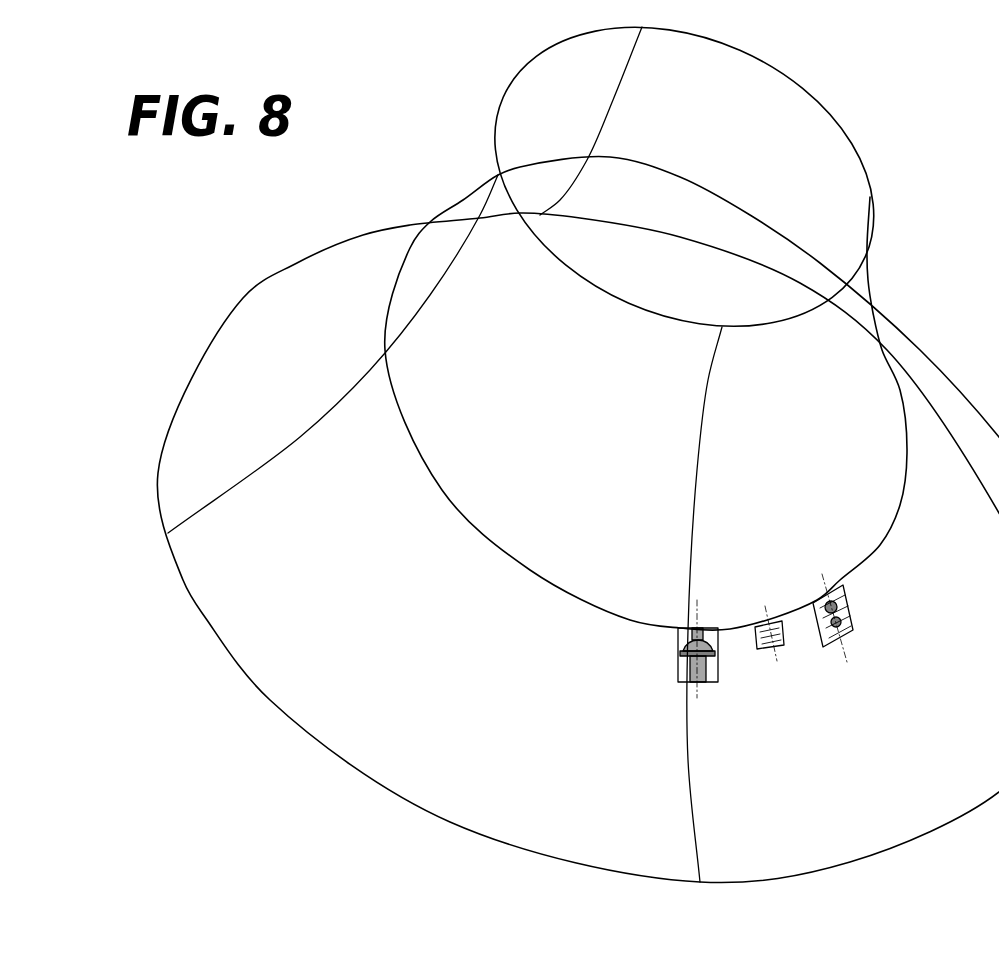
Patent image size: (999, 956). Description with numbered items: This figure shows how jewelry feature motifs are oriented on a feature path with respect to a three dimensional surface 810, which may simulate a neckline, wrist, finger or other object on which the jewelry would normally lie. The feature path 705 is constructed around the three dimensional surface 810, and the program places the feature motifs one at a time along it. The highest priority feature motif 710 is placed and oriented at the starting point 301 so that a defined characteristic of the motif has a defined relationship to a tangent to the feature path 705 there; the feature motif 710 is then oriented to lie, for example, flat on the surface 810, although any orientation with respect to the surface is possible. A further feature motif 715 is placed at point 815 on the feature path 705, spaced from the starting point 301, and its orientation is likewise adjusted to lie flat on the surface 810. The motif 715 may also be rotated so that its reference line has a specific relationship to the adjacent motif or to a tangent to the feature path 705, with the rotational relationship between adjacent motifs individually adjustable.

The three dimensional surface 810 is at (238, 613).
The feature path 705 is at (880, 545).
The feature motif 710 is at (730, 682).
The starting point 301 is at (703, 628).
The feature motif 715 is at (853, 630).
The point 815 is at (830, 592).